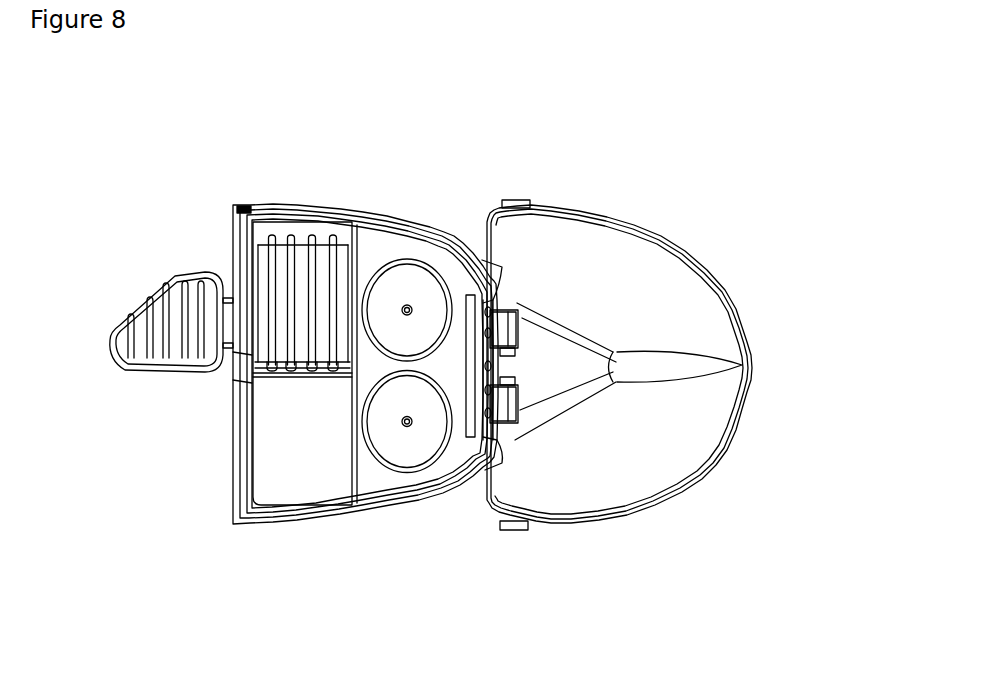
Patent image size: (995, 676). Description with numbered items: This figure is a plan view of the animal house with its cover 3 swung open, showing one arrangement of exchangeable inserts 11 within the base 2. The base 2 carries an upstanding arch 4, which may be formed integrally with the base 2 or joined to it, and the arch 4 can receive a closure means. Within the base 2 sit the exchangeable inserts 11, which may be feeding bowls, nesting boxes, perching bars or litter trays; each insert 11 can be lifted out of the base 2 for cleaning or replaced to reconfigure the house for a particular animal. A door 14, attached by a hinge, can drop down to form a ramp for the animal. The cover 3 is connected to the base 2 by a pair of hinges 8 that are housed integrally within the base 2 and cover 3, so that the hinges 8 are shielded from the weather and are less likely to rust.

The base 2 is at (408, 505).
The cover 3 is at (600, 308).
The arch 4 is at (242, 502).
The hinge 8 is at (506, 324).
The exchangeable insert 11 is at (318, 278).
The door 14 is at (161, 332).